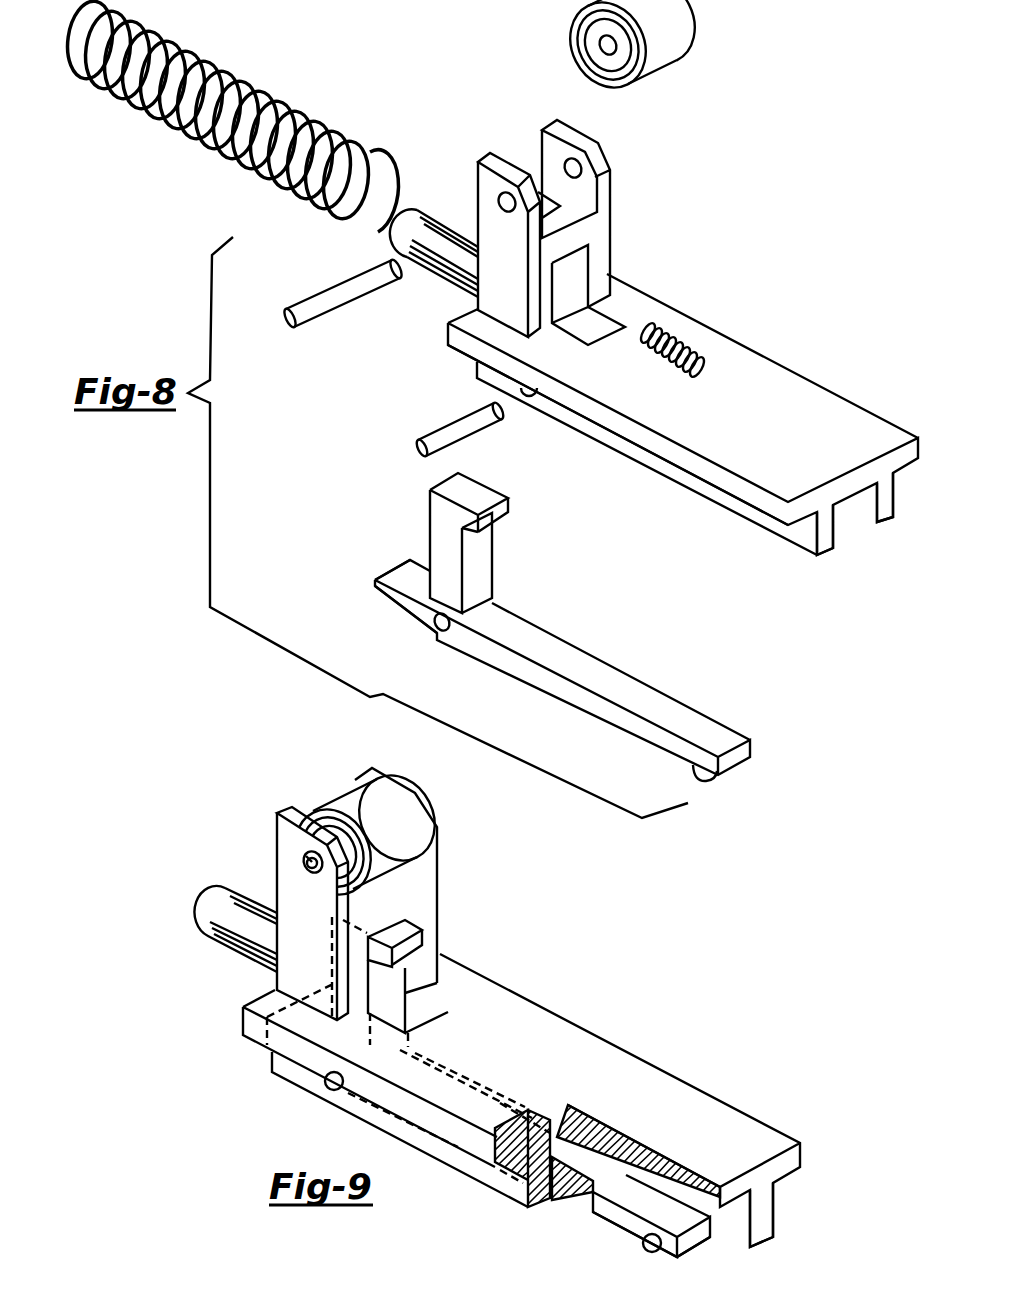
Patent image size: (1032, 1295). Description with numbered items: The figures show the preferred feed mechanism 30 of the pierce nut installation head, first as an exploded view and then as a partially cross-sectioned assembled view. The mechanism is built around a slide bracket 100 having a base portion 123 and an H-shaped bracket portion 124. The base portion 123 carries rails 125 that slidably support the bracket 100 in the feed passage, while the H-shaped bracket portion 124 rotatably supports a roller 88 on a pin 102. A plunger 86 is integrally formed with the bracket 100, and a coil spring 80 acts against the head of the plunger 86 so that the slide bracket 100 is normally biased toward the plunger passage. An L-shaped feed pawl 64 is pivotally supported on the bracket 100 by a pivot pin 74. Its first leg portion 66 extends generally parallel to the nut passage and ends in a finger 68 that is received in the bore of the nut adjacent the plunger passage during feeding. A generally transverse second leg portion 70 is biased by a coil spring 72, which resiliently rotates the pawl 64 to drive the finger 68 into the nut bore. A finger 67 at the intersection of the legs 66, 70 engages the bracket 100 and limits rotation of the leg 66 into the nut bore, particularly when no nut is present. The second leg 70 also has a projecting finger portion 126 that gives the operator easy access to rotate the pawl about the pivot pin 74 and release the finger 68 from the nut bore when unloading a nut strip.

In FIG. 8, the nut feed assembly 30 is at (758, 253).
In FIG. 9, the nut feed assembly 30 is at (568, 967).
In FIG. 8, the L-shaped feed pawl 64 is at (663, 657).
In FIG. 9, the L-shaped feed pawl 64 is at (586, 1218).
In FIG. 8, the first leg portion 66 is at (558, 660).
In FIG. 8, the finger 67 is at (405, 570).
In FIG. 8, the finger 68 is at (702, 781).
In FIG. 9, the finger 68 is at (655, 1252).
In FIG. 8, the second leg portion 70 is at (478, 558).
In FIG. 9, the second leg portion 70 is at (400, 1008).
In FIG. 8, the coil spring 72 is at (668, 333).
In FIG. 8, the pivot pin 74 is at (433, 425).
In FIG. 9, the pivot pin 74 is at (328, 1087).
In FIG. 8, the coil spring 80 is at (303, 110).
In FIG. 8, the plunger 86 is at (440, 210).
In FIG. 9, the plunger 86 is at (248, 952).
In FIG. 8, the roller 88 is at (667, 58).
In FIG. 9, the roller 88 is at (343, 803).
In FIG. 8, the bracket 100 is at (683, 449).
In FIG. 9, the bracket 100 is at (543, 1087).
In FIG. 8, the pin 102 is at (375, 290).
In FIG. 9, the pin 102 is at (305, 866).
In FIG. 8, the base portion 123 is at (742, 463).
In FIG. 9, the base portion 123 is at (632, 1078).
In FIG. 8, the H-shaped bracket portion 124 is at (603, 192).
In FIG. 9, the H-shaped bracket portion 124 is at (372, 894).
In FIG. 8, the rails 125 is at (823, 552).
In FIG. 9, the rails 125 is at (767, 1217).
In FIG. 8, the projecting finger portion 126 is at (505, 508).
In FIG. 9, the projecting finger portion 126 is at (433, 958).